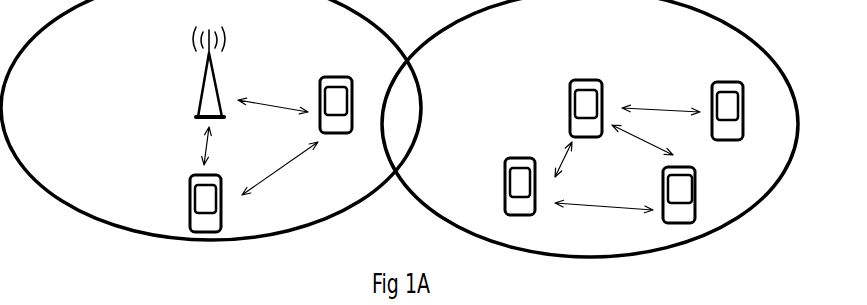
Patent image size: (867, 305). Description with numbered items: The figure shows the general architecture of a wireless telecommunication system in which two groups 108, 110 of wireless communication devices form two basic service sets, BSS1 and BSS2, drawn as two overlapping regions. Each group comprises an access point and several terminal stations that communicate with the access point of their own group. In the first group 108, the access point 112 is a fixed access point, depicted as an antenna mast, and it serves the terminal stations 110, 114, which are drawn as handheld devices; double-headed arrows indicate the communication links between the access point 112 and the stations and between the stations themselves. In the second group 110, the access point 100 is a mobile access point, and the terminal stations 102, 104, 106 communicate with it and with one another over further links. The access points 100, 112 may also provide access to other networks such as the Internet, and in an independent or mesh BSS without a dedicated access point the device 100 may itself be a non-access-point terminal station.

The access point 100 is at (570, 83).
The terminal station 102 is at (505, 161).
The terminal station 104 is at (712, 86).
The terminal station 106 is at (663, 170).
The group of wireless communication devices 108 is at (143, 25).
The group of wireless communication devices 110 is at (586, 31).
The access point 112 is at (198, 99).
The terminal station 114 is at (320, 80).